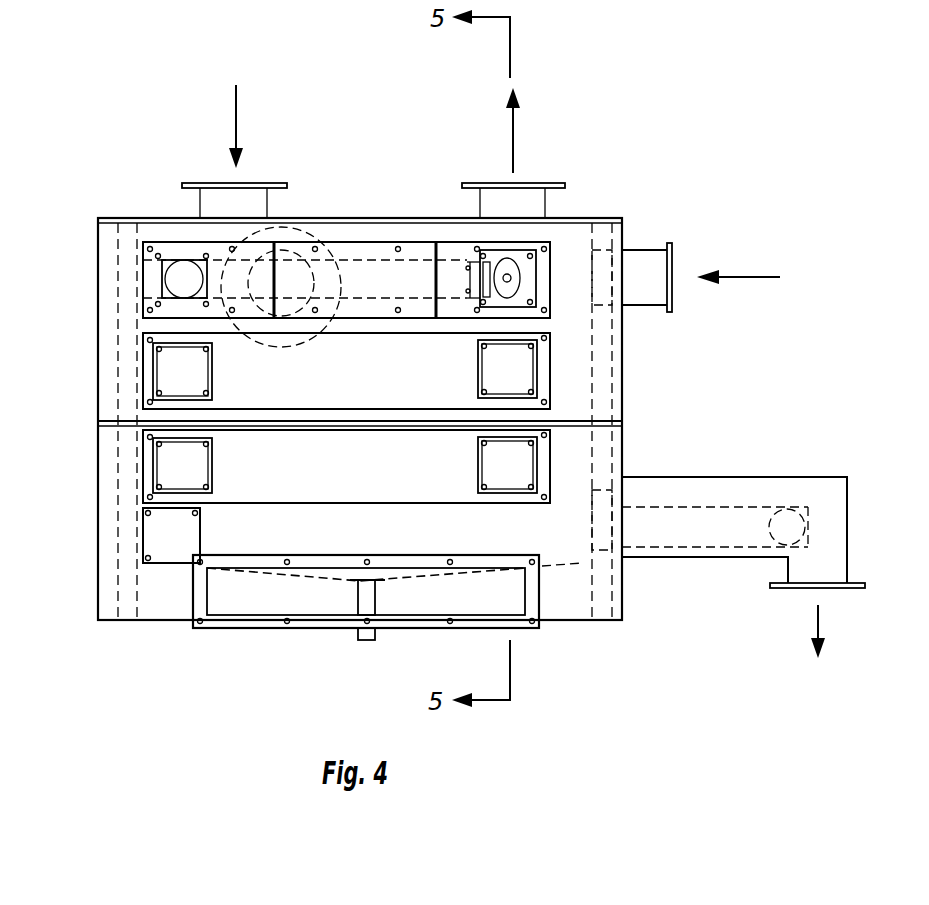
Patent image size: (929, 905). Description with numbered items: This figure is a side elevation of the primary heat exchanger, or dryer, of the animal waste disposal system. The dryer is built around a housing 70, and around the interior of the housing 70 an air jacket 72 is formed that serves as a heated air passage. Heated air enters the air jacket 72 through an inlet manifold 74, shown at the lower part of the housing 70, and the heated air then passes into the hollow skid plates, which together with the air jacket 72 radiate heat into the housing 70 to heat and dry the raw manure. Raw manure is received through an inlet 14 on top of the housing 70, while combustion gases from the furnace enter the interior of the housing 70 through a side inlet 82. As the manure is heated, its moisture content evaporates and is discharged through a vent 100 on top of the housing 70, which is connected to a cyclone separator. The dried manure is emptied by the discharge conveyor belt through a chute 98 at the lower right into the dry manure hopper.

The inlet 14 is at (213, 203).
The vent 100 is at (533, 203).
The inlet 82 is at (647, 258).
The housing 70 is at (97, 337).
The air jacket 72 is at (602, 382).
The chute 98 is at (830, 510).
The inlet manifold 74 is at (233, 622).